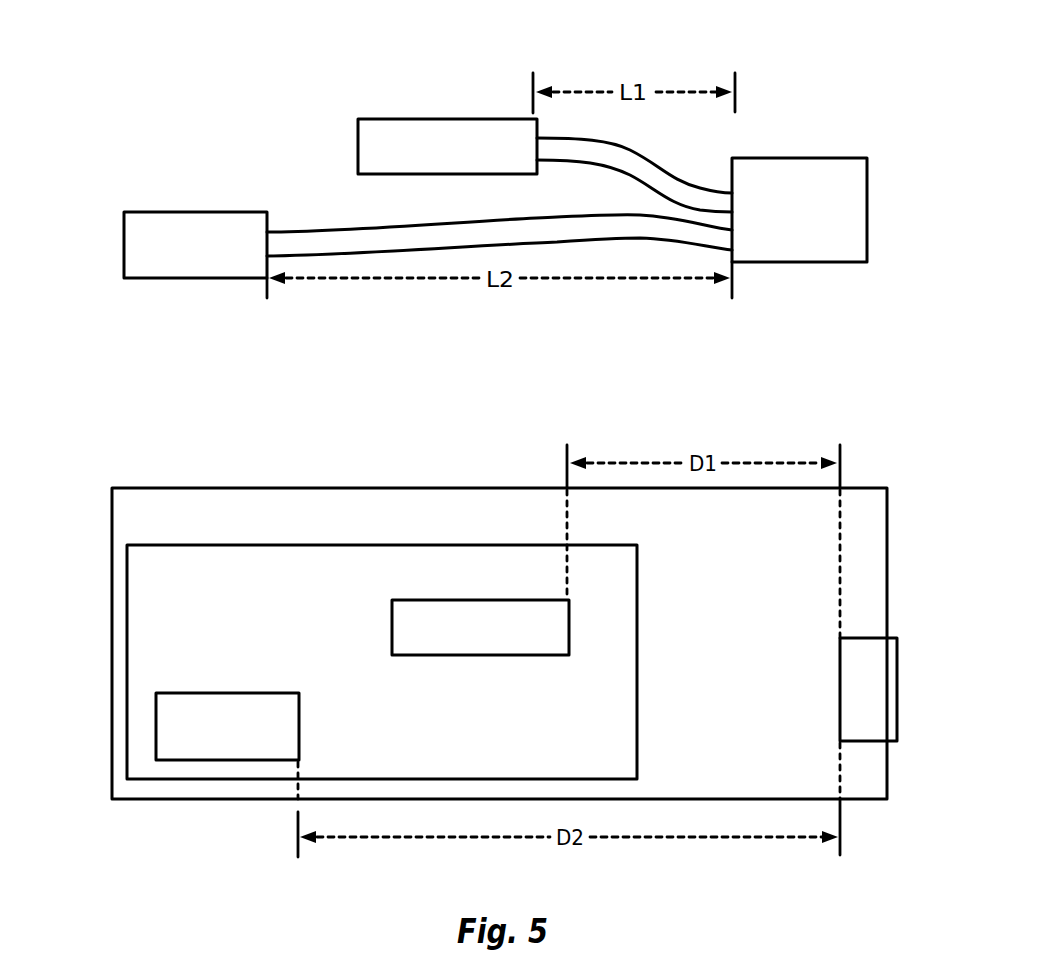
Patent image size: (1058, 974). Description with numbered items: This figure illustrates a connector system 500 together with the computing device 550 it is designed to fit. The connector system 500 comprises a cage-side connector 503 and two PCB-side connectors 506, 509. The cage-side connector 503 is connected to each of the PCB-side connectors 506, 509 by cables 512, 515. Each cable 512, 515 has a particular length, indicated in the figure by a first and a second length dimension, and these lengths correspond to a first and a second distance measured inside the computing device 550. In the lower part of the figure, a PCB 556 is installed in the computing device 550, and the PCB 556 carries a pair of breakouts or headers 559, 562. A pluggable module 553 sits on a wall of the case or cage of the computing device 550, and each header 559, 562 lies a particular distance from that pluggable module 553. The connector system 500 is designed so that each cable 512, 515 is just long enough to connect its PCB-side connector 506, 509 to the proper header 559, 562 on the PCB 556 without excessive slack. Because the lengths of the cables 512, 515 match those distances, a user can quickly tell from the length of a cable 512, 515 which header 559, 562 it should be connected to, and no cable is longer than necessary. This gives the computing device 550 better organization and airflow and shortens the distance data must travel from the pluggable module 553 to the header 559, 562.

The connector system 500 is at (187, 73).
The cage-side connector 503 is at (832, 158).
The PCB-side connector 506 is at (433, 119).
The PCB-side connector 509 is at (200, 212).
The cable 512 is at (680, 180).
The cable 515 is at (340, 232).
The computing device 550 is at (158, 488).
The pluggable module 553 is at (899, 638).
The PCB 556 is at (320, 545).
The header 559 is at (405, 600).
The header 562 is at (156, 725).